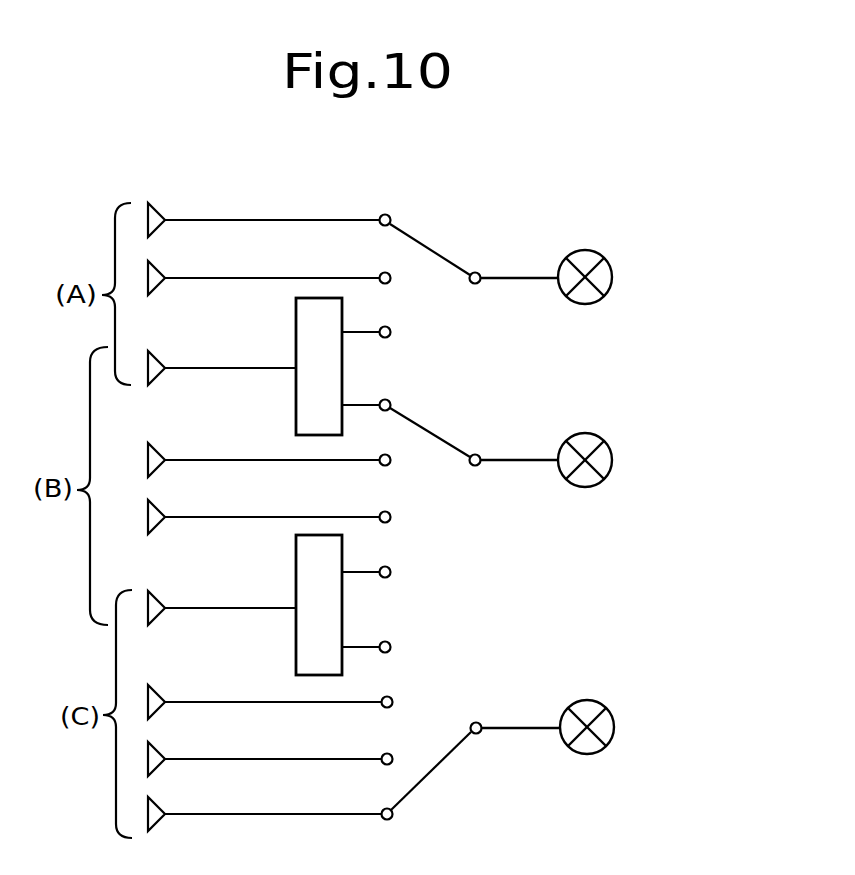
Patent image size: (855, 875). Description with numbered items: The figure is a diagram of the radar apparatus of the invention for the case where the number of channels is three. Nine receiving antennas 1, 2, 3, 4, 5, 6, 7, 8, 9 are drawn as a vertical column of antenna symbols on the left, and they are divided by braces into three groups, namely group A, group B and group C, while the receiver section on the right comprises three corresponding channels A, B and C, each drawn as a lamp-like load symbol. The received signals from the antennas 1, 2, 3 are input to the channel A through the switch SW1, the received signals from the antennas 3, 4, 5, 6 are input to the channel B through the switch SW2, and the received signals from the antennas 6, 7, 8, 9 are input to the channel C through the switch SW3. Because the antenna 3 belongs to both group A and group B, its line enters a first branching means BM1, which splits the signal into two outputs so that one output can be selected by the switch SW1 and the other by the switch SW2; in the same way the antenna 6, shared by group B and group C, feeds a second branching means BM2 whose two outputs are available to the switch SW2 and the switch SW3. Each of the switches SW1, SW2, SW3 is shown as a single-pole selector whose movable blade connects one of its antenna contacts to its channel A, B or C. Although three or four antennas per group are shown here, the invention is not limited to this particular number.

The antenna 1 is at (269, 216).
The antenna 2 is at (269, 274).
The antenna 3 is at (222, 364).
The antenna 4 is at (269, 456).
The antenna 5 is at (269, 513).
The antenna 6 is at (222, 604).
The antenna 7 is at (270, 698).
The antenna 8 is at (270, 755).
The antenna 9 is at (270, 810).
The branching means BM1 is at (327, 371).
The branching means BM2 is at (327, 614).
The switch SW1 is at (440, 254).
The switch SW2 is at (440, 437).
The switch SW3 is at (441, 767).
The channel A is at (577, 277).
The channel B is at (577, 460).
The channel C is at (578, 727).